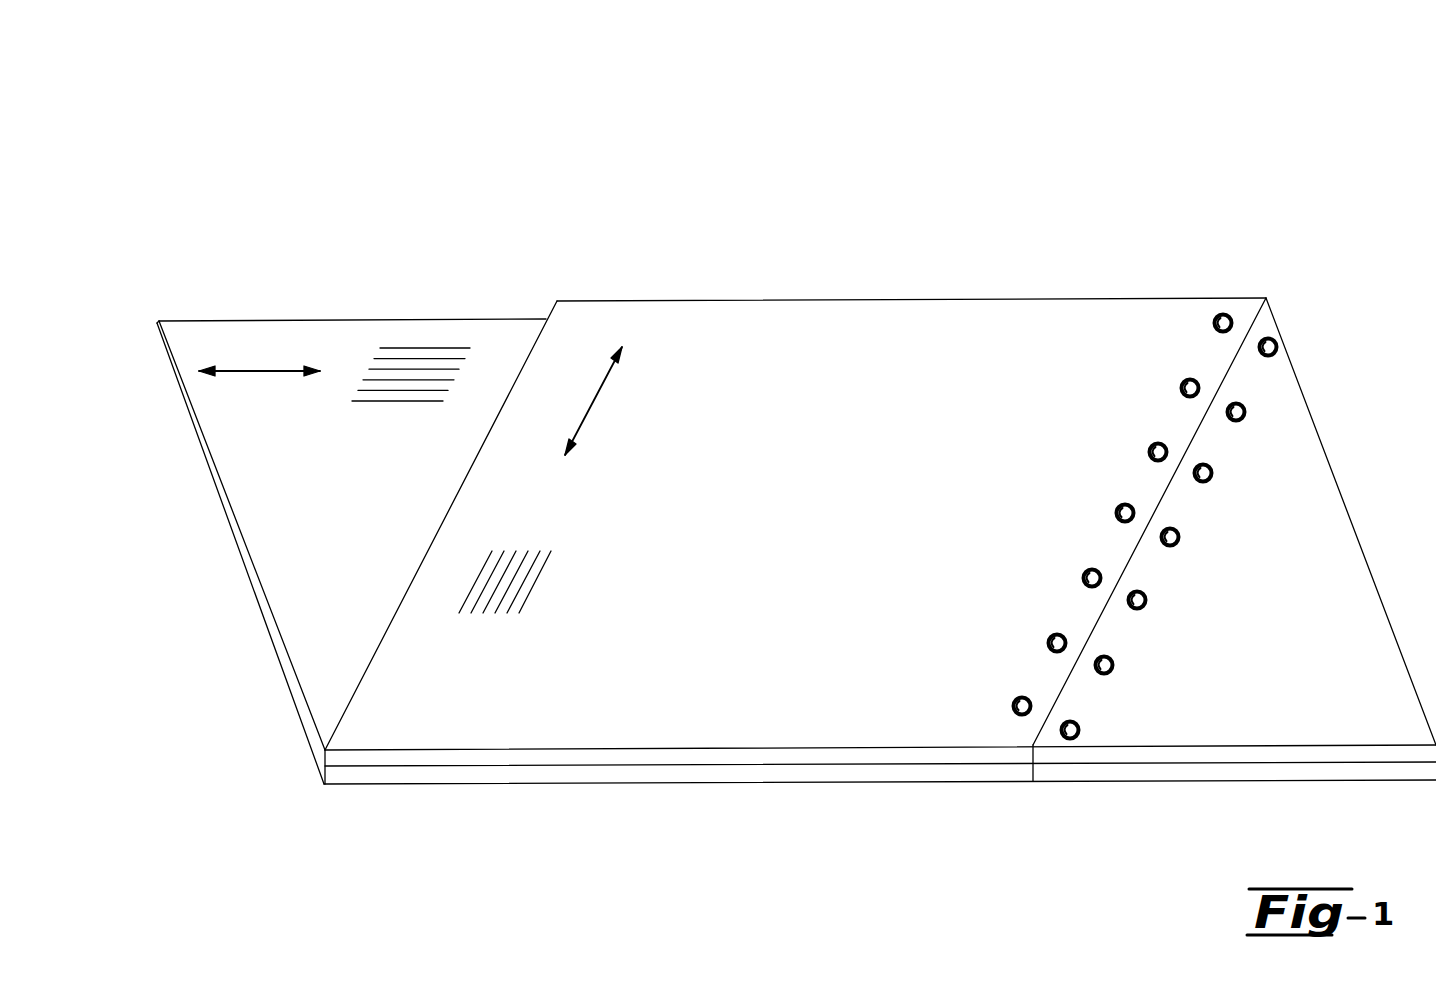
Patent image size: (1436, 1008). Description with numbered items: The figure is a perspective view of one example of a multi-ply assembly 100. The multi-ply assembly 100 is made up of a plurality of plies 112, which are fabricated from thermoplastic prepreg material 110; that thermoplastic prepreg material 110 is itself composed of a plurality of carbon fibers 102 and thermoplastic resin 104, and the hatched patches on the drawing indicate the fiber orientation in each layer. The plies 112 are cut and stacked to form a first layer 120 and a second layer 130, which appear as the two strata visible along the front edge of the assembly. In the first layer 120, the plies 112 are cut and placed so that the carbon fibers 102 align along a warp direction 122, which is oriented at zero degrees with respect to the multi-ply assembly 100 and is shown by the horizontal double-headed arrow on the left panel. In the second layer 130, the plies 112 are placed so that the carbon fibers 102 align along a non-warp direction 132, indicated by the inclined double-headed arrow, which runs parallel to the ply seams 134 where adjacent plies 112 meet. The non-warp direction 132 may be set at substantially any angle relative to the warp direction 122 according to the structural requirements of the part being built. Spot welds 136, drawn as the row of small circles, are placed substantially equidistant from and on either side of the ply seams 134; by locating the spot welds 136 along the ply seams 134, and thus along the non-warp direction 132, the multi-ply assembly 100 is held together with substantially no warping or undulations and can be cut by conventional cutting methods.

The multi-ply assembly 100 is at (796, 483).
The carbon fibers 102 is at (423, 347).
The thermoplastic resin 104 is at (502, 357).
The thermoplastic prepreg material 110 is at (340, 319).
The plies 112 is at (982, 730).
The first layer 120 is at (502, 775).
The warp direction 122 is at (265, 370).
The second layer 130 is at (415, 760).
The non-warp direction 132 is at (595, 392).
The ply seams 134 is at (418, 565).
The spot welds 136 is at (1150, 445).